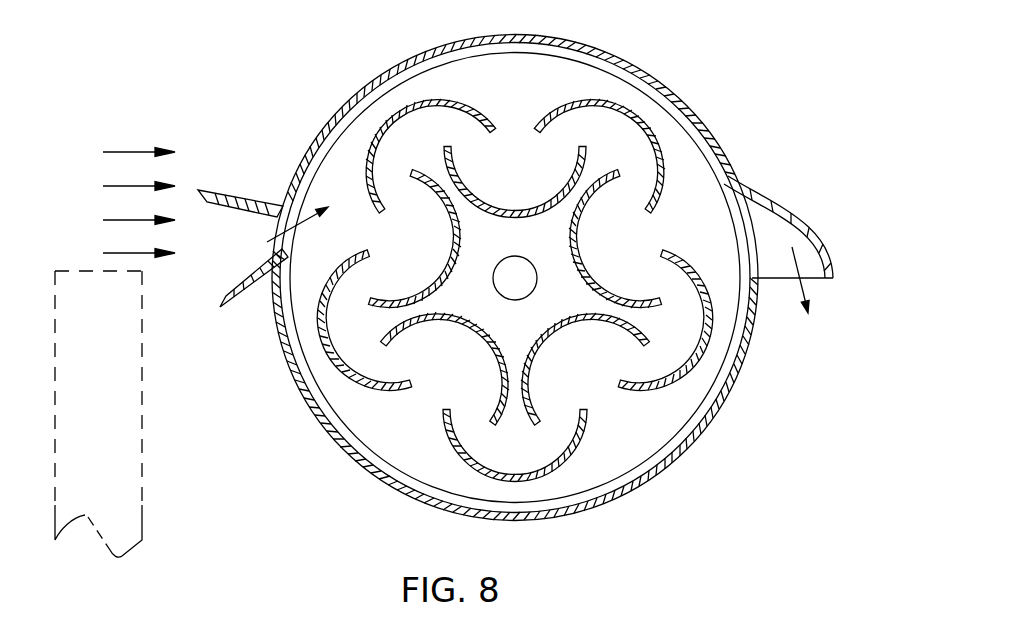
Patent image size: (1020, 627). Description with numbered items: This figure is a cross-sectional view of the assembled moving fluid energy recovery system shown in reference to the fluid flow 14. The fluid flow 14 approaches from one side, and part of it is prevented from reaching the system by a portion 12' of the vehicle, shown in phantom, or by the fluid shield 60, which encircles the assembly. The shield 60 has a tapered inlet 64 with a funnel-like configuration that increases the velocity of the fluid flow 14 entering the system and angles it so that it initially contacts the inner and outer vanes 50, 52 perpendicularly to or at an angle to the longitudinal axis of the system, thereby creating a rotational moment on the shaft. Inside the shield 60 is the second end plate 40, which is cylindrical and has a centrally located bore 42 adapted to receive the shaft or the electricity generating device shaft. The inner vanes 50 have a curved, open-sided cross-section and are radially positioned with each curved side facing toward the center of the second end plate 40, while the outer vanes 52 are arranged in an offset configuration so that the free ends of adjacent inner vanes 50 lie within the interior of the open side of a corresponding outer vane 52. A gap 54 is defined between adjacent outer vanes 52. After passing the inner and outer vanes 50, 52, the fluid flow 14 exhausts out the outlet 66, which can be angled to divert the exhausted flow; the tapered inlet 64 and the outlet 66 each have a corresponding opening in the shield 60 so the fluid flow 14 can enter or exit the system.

The portion of the vehicle 12' is at (157, 431).
The fluid flow 14 is at (137, 152).
The second end plate 40 is at (594, 64).
The central bore 42 is at (541, 263).
The inner vanes 50 is at (571, 185).
The outer vanes 52 is at (398, 113).
The gap 54 is at (517, 127).
The fluid shield 60 is at (424, 501).
The tapered inlet 64 is at (258, 213).
The outlet 66 is at (787, 210).